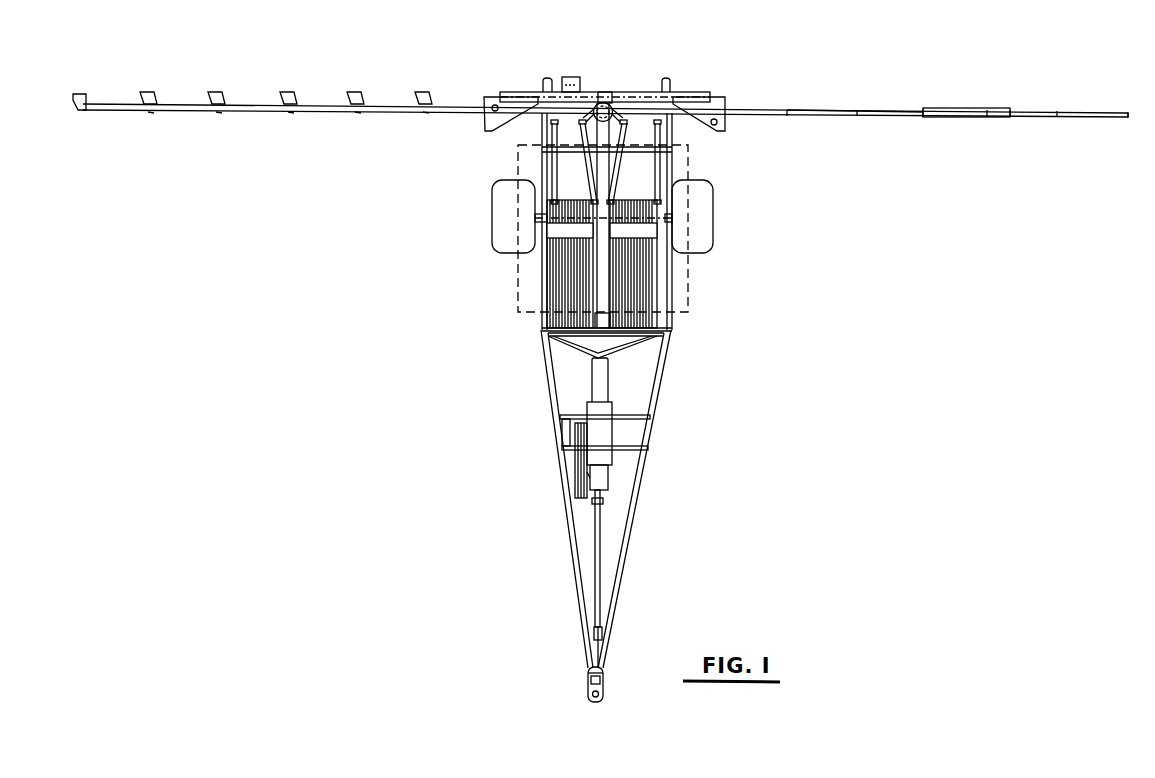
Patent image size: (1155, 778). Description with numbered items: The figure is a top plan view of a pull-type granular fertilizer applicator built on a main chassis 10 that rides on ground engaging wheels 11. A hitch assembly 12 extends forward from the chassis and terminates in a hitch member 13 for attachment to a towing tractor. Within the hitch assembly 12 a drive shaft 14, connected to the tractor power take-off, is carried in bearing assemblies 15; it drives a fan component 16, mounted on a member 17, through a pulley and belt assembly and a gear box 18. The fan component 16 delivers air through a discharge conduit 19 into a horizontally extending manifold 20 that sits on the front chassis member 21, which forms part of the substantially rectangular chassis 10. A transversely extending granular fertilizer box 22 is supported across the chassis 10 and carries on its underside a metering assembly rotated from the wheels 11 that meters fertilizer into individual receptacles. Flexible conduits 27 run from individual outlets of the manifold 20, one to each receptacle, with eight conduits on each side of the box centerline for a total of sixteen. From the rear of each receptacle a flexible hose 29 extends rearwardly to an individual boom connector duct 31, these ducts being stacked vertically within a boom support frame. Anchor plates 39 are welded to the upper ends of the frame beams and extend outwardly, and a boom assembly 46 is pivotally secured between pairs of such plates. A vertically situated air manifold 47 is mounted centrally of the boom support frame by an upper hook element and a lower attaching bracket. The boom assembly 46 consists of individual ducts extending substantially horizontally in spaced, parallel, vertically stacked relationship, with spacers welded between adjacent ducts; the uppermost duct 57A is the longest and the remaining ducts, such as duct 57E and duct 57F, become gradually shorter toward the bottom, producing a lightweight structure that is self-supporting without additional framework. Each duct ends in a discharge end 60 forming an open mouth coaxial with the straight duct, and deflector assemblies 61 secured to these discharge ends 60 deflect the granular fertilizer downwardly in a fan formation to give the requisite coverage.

The main chassis 10 is at (538, 268).
The ground engaging wheels 11 is at (495, 214).
The hitch assembly 12 is at (573, 586).
The hitch member 13 is at (603, 696).
The drive shaft 14 is at (596, 530).
The bearing assemblies 15 is at (602, 628).
The fan component 16 is at (604, 410).
The member 17 is at (640, 414).
The gear box 18 is at (572, 433).
The discharge conduit 19 is at (600, 376).
The manifold 20 is at (577, 346).
The front chassis member 21 is at (548, 335).
The granular fertilizer box 22 is at (693, 150).
The flexible conduits 27 is at (640, 290).
The flexible hose 29 is at (548, 165).
The boom connector ducts 31 is at (512, 100).
The anchor plates 39 is at (706, 107).
The boom assembly 46 is at (930, 103).
The air manifold 47 is at (612, 103).
The uppermost duct 57A is at (1010, 113).
The duct 57E is at (856, 116).
The duct 57F is at (786, 116).
The discharge ends 60 is at (926, 116).
The deflector assemblies 61 is at (343, 90).